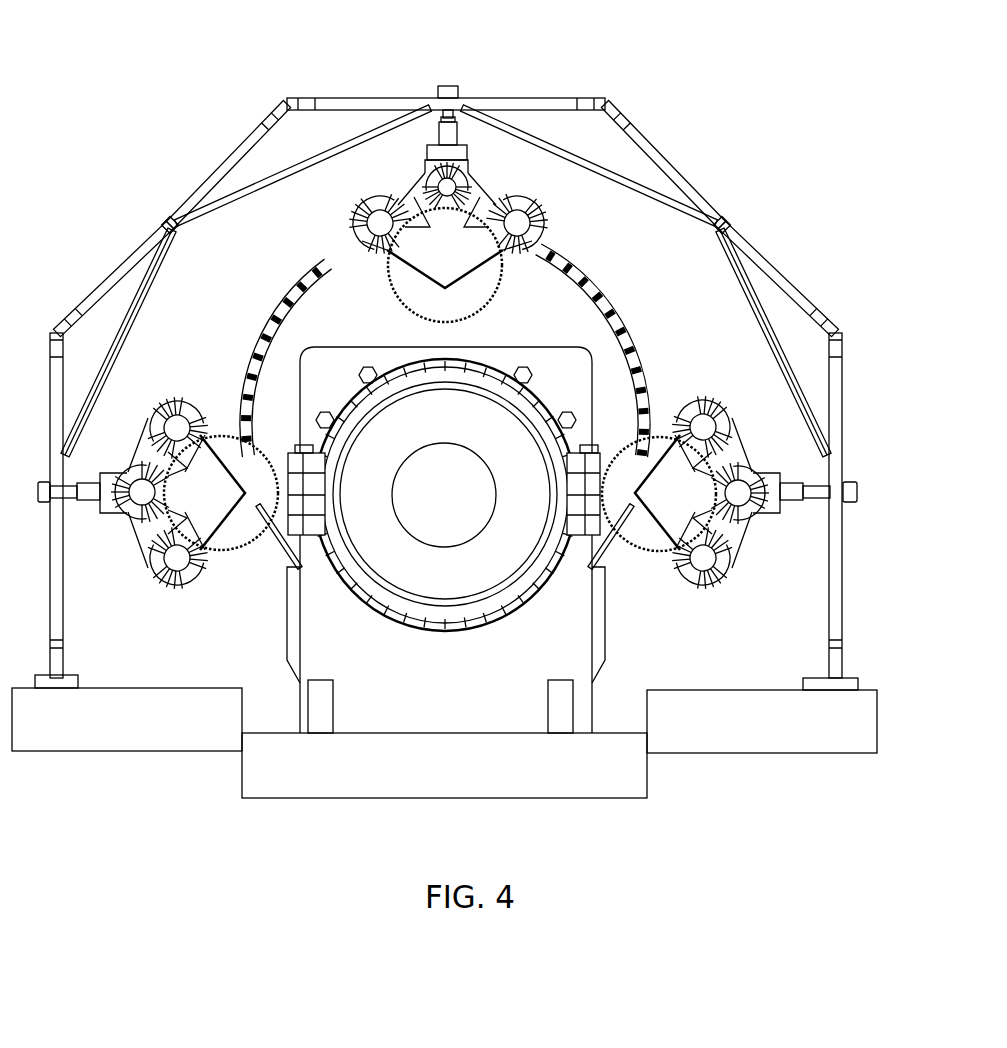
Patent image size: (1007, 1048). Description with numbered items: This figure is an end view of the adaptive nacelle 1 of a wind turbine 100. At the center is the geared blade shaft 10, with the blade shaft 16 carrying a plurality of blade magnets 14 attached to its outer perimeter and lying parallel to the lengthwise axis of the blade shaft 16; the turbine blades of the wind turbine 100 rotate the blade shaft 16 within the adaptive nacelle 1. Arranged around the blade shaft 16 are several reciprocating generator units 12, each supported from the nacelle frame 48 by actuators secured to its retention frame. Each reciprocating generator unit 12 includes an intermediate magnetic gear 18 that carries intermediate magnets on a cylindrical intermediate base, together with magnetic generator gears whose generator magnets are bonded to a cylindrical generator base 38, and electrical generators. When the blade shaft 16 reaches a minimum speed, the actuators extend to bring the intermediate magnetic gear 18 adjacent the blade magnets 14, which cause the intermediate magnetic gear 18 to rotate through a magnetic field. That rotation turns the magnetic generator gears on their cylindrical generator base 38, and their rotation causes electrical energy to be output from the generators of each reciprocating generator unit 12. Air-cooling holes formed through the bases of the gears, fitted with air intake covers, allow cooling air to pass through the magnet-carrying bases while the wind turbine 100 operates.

The wind turbine 100 is at (221, 120).
The adaptive nacelle 1 is at (149, 344).
The cylindrical generator base 38 is at (618, 98).
The nacelle frame 48 is at (660, 147).
The geared blade shaft 10 is at (510, 275).
The blade magnets 14 is at (509, 357).
The blade shaft 16 is at (525, 453).
The intermediate magnetic gear 18 is at (482, 277).
The reciprocating generator unit 12 is at (484, 166).